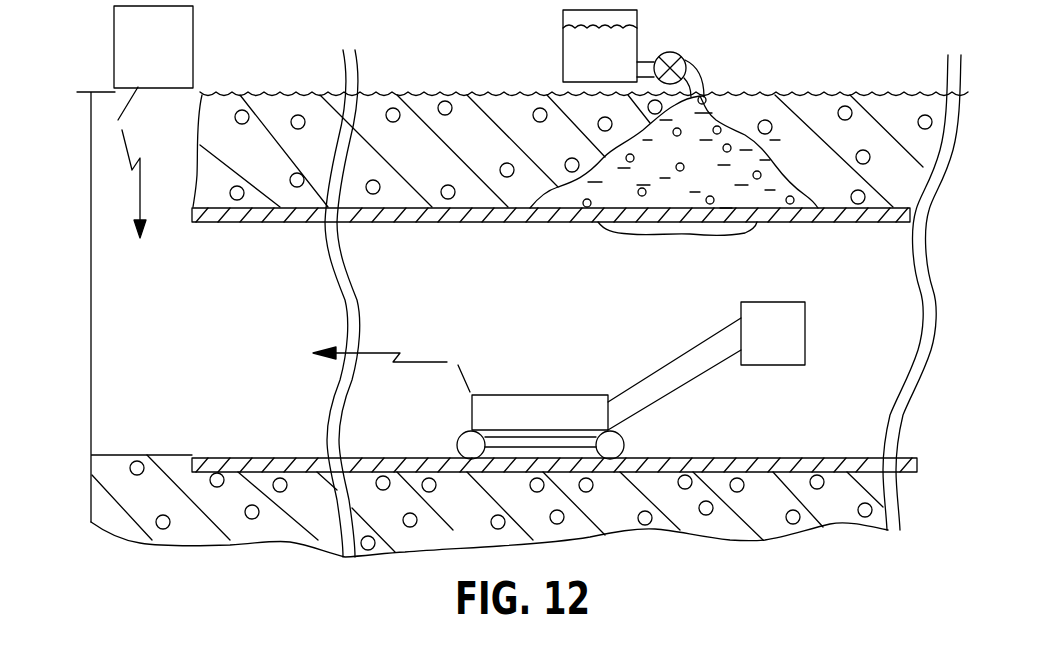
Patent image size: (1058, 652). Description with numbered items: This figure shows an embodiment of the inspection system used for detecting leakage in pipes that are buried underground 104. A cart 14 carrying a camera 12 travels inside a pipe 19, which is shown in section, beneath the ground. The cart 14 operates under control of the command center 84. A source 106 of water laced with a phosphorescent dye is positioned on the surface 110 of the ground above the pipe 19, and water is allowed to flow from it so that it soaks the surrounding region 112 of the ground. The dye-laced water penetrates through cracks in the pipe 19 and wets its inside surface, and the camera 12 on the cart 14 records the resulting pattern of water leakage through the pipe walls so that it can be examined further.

The command center 84 is at (166, 59).
The surface of the ground 110 is at (432, 95).
The underground 104 is at (438, 172).
The source of water 106 is at (605, 55).
The surrounding region 112 is at (703, 116).
The pipe 19 is at (448, 222).
The cart 14 is at (543, 413).
The camera 12 is at (785, 345).